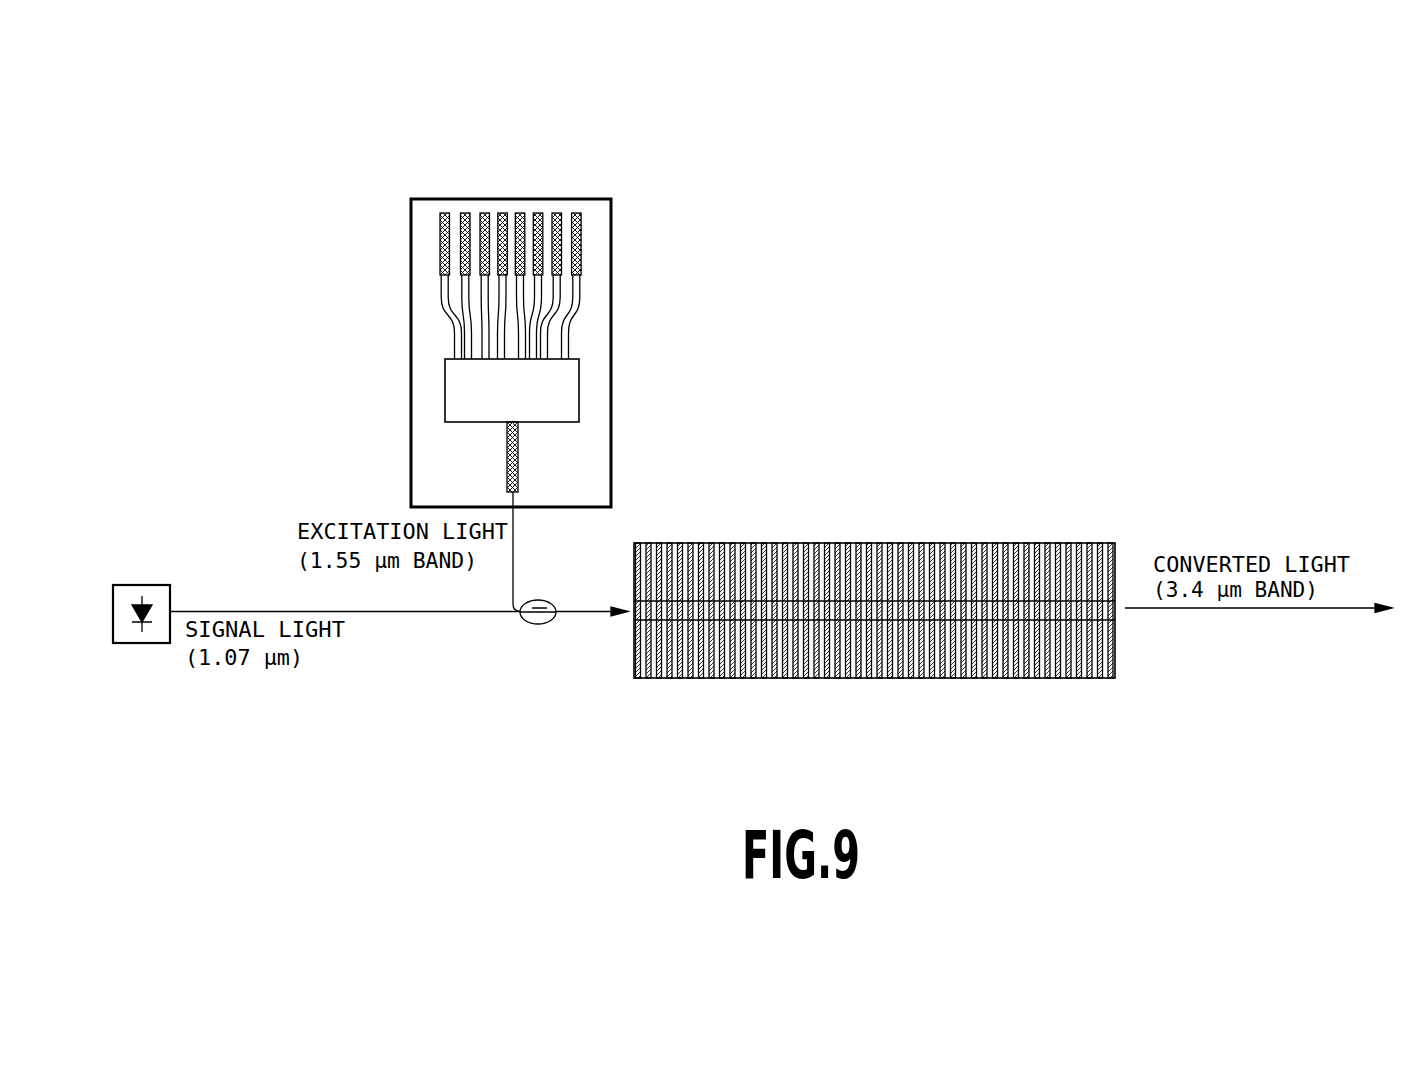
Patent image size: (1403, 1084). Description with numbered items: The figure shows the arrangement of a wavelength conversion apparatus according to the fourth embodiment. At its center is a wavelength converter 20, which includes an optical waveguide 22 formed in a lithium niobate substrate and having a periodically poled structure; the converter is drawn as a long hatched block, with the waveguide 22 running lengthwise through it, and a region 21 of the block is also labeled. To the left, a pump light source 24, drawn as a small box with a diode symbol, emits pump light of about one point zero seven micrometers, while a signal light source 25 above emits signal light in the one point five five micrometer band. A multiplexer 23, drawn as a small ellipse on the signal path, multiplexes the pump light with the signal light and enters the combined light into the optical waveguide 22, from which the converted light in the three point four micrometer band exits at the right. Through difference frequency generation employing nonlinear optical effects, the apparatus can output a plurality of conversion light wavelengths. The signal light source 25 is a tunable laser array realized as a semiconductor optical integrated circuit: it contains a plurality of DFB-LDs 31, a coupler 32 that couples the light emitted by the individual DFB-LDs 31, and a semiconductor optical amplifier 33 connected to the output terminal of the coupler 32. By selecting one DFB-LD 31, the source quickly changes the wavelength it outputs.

The wavelength converter 20 is at (908, 634).
The nonlinear optical crystal region 21 is at (1116, 557).
The optical waveguide 22 is at (1108, 614).
The multiplexer 23 is at (538, 624).
The pump light source 24 is at (142, 585).
The signal light source 25 is at (500, 199).
The DFB-LD 31 is at (583, 233).
The coupler 32 is at (570, 385).
The semiconductor optical amplifier 33 is at (519, 453).